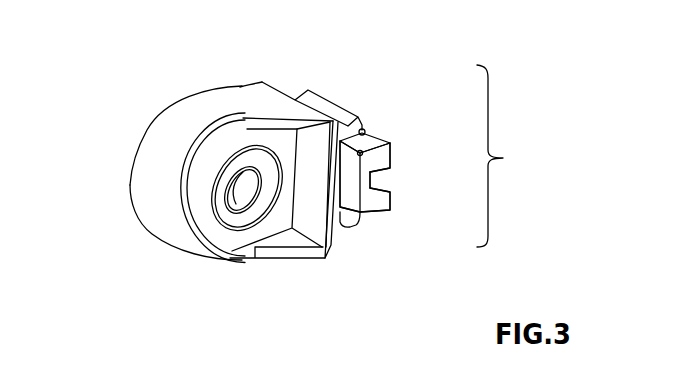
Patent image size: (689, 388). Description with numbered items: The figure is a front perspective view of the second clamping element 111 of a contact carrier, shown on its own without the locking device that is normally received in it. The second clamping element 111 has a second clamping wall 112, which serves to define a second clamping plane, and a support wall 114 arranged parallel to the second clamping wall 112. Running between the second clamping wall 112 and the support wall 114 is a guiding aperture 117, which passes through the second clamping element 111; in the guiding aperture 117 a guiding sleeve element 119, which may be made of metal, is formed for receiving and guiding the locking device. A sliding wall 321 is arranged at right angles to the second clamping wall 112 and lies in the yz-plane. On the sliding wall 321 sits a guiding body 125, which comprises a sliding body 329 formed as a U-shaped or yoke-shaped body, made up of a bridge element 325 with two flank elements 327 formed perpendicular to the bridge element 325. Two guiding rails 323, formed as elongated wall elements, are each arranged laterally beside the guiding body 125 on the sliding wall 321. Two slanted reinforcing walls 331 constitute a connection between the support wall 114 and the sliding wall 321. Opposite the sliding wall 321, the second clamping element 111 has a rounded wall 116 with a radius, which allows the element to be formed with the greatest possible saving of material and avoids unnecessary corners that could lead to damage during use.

The second clamping element 111 is at (132, 28).
The second clamping wall 112 is at (128, 182).
The support wall 114 is at (208, 170).
The rounded wall 116 is at (148, 151).
The guiding aperture 117 is at (235, 205).
The guiding sleeve element 119 is at (236, 227).
The guiding body 125 is at (393, 225).
The sliding wall 321 is at (358, 224).
The guiding rails 323 is at (341, 124).
The bridge element 325 is at (372, 184).
The flank elements 327 is at (402, 133).
The sliding body 329 is at (516, 156).
The reinforcing walls 331 is at (292, 127).